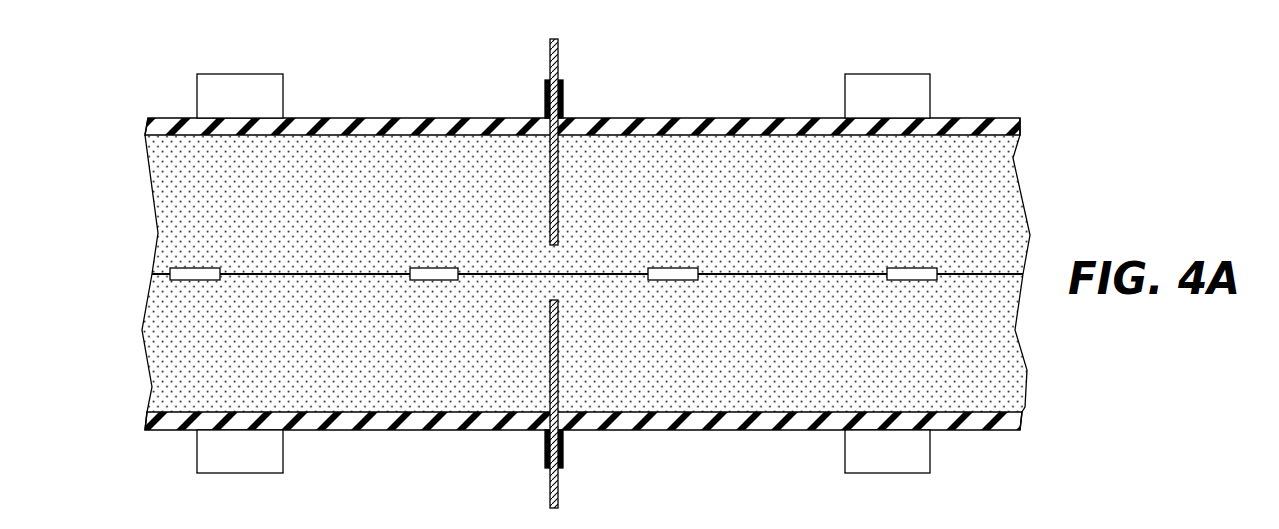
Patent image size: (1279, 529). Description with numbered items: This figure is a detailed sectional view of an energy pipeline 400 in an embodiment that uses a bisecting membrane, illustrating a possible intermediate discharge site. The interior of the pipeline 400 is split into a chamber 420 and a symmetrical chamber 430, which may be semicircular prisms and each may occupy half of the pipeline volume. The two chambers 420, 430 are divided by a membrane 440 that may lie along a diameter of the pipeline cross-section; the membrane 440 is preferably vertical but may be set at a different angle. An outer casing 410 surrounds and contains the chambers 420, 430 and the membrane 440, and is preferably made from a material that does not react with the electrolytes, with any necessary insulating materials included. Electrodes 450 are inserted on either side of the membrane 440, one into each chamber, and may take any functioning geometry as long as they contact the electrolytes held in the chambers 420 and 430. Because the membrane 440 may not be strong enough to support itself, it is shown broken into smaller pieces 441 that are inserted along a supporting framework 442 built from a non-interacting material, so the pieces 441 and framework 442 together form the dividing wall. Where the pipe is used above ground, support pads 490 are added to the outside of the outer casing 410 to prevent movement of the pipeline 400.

The energy pipeline 400 is at (1062, 84).
The outer casing 410 is at (668, 118).
The chamber 420 is at (1002, 193).
The symmetrical chamber 430 is at (1000, 355).
The membrane 440 is at (264, 274).
The smaller pieces 441 is at (313, 274).
The supporting framework 442 is at (193, 281).
The electrodes 450 is at (557, 55).
The support pads 490 is at (257, 74).